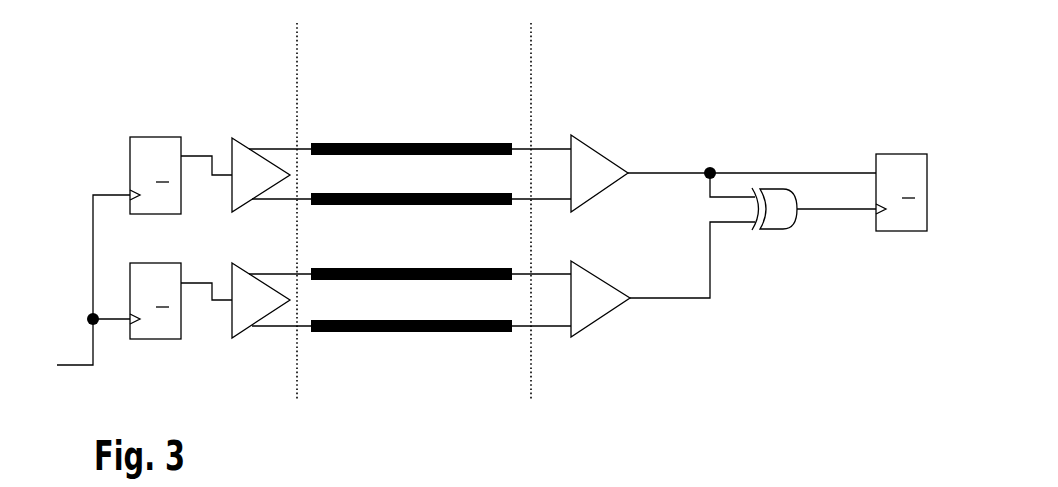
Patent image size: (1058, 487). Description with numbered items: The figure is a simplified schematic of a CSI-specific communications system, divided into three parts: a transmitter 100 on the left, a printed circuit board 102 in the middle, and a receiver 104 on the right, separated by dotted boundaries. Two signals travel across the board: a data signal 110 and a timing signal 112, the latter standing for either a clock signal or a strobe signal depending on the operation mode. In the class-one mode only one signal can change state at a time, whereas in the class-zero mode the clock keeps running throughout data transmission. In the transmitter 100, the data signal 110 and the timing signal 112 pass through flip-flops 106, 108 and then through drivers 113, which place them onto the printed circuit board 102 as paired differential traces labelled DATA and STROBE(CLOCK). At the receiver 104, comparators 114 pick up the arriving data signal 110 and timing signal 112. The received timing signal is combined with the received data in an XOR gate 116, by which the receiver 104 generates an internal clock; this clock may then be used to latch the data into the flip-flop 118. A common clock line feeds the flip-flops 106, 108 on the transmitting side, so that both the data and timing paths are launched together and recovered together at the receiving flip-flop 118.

The transmitter 100 is at (184, 195).
The printed circuit board 102 is at (434, 211).
The receiver 104 is at (749, 181).
The flip-flop 106 is at (153, 137).
The flip-flop 108 is at (153, 263).
The data signal 110 is at (393, 143).
The timing signal 112 is at (388, 268).
The driver 113 is at (238, 141).
The comparator 114 is at (580, 141).
The XOR gate 116 is at (786, 229).
The flip-flop 118 is at (908, 154).